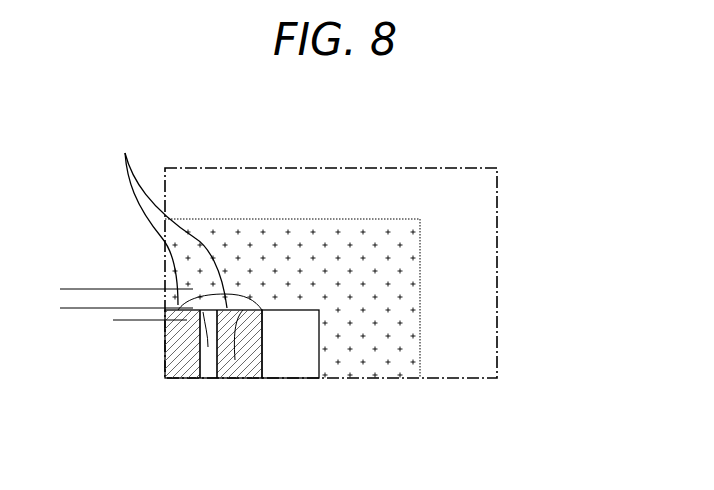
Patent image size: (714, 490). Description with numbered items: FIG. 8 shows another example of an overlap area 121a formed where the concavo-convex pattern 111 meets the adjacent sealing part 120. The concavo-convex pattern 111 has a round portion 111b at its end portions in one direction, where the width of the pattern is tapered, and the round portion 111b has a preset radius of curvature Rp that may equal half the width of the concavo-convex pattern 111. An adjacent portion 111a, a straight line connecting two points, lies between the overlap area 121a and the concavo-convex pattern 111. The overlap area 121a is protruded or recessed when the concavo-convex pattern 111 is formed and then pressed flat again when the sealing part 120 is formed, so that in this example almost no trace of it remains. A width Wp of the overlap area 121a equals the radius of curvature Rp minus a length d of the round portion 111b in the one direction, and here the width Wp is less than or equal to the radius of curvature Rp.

The sealing part 120 is at (370, 317).
The concavo-convex pattern 111 is at (213, 372).
The adjacent portion 111a is at (253, 302).
The round portion 111b is at (250, 286).
The overlap area 121a is at (162, 219).
The radius of curvature Rp is at (248, 297).
The width of the overlap area Wp is at (103, 225).
The length of the round portion d is at (130, 378).